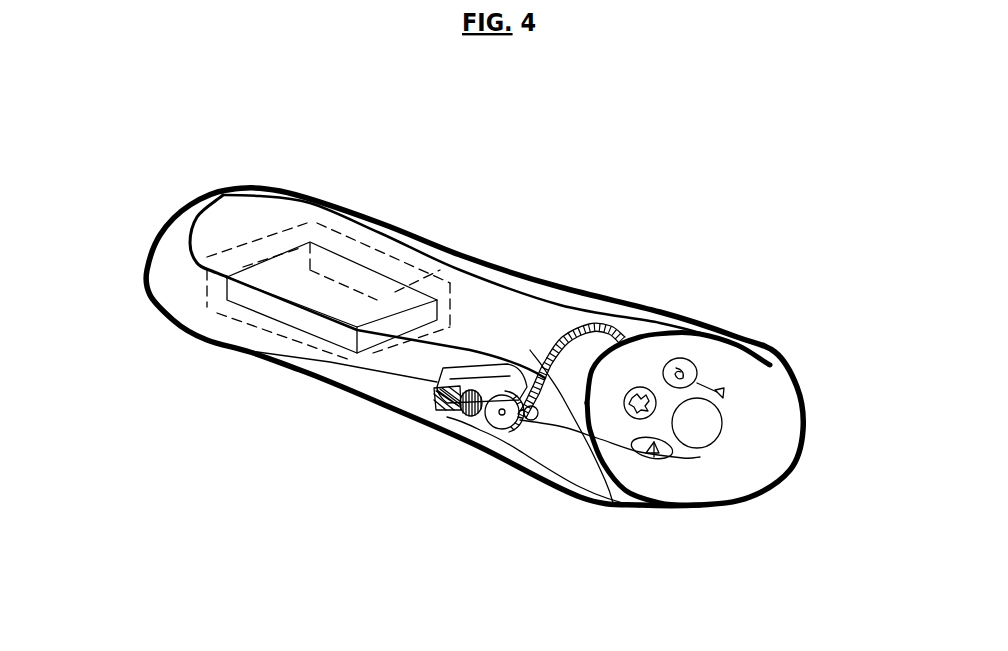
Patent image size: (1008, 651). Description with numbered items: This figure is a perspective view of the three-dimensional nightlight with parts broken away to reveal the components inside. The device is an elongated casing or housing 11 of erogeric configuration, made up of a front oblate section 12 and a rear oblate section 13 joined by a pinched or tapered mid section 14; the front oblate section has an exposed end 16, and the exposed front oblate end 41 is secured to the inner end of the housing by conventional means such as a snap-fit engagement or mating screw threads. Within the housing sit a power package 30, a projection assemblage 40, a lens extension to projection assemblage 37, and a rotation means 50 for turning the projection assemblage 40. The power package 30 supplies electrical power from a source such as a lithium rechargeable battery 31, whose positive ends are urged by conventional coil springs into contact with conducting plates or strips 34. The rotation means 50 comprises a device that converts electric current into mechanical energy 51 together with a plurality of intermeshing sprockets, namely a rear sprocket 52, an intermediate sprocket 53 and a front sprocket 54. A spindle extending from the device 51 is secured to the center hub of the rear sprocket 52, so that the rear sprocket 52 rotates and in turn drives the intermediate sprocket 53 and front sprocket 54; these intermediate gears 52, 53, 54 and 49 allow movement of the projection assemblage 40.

The casing or housing 11 is at (605, 338).
The front oblate section 12 is at (702, 340).
The rear oblate section 13 is at (373, 212).
The mid section 14 is at (477, 430).
The exposed end 16 is at (768, 468).
The power package 30 is at (277, 228).
The lithium rechargeable battery 31 is at (247, 300).
The conducting plates or strips 34 is at (225, 262).
The lens extension to projection assemblage 37 is at (655, 408).
The projection assemblage 40 is at (738, 393).
The exposed front oblate end 41 is at (652, 358).
The intermediate gear 49 is at (530, 350).
The rotation means 50 is at (395, 383).
The device that converts electric current into mechanical energy 51 is at (473, 376).
The rear sprocket 52 is at (433, 402).
The intermediate sprocket 53 is at (438, 410).
The front sprocket 54 is at (494, 432).